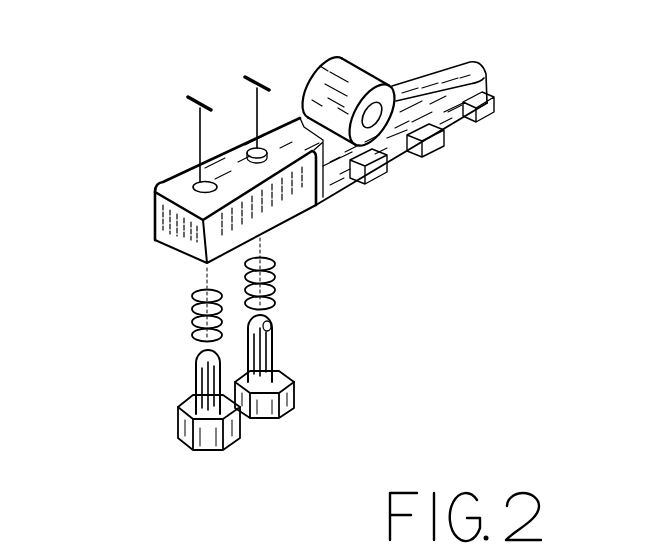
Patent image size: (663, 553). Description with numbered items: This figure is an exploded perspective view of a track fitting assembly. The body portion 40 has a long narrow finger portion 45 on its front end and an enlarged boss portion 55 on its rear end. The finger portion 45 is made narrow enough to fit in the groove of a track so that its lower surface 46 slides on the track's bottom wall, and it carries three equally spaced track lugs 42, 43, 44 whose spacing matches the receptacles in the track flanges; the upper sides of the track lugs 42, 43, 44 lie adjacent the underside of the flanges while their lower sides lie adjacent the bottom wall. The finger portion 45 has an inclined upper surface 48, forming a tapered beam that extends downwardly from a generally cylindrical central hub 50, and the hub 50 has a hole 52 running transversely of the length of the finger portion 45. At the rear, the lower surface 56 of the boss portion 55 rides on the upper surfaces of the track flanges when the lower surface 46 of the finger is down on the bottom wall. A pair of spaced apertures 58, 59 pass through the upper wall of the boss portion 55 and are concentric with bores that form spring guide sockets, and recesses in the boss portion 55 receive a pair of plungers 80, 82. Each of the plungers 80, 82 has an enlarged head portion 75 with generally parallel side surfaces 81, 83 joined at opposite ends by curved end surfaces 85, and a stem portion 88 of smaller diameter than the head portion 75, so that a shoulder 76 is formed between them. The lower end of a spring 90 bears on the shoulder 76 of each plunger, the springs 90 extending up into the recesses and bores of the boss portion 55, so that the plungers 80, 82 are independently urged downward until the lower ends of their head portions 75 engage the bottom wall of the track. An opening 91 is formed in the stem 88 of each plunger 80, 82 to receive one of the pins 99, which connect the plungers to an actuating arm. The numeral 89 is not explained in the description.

The body portion 40 is at (132, 203).
The track lug 42 is at (467, 121).
The track lug 43 is at (445, 138).
The track lug 44 is at (392, 165).
The finger portion 45 is at (423, 101).
The lower surface 46 is at (336, 190).
The inclined upper surface 48 is at (447, 74).
The central hub 50 is at (326, 76).
The hole 52 is at (384, 97).
The boss portion 55 is at (170, 249).
The lower surface 56 is at (180, 260).
The aperture 58 is at (198, 181).
The aperture 59 is at (255, 148).
The head portion 75 is at (228, 448).
The shoulder 76 is at (198, 446).
The plunger 80 is at (200, 465).
The side surface 81 is at (176, 428).
The plunger 82 is at (315, 357).
The side surface 83 is at (300, 381).
The curved end surface 85 is at (180, 416).
The stem portion 88 is at (192, 372).
The nut side 89 is at (296, 395).
The spring 90 is at (192, 296).
The opening 91 is at (272, 322).
The pin 99 is at (247, 78).